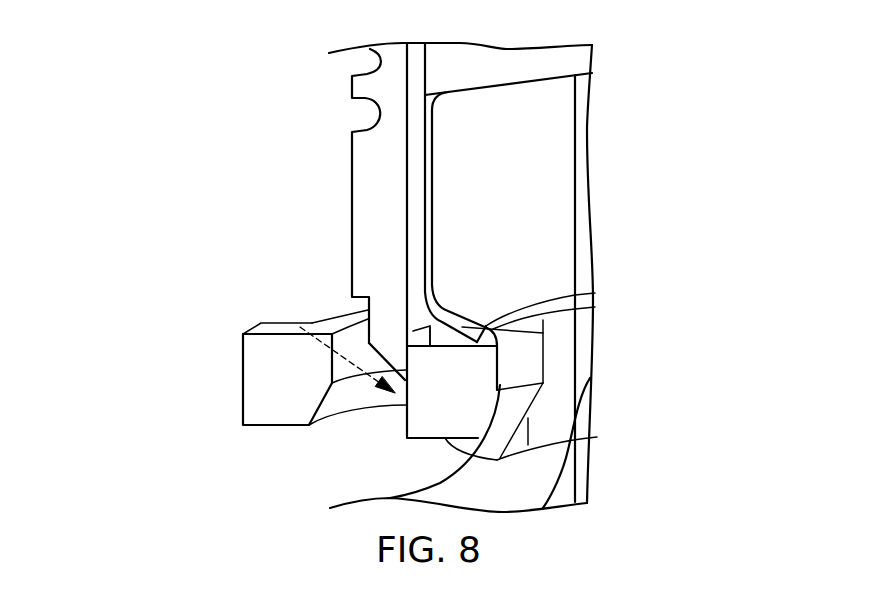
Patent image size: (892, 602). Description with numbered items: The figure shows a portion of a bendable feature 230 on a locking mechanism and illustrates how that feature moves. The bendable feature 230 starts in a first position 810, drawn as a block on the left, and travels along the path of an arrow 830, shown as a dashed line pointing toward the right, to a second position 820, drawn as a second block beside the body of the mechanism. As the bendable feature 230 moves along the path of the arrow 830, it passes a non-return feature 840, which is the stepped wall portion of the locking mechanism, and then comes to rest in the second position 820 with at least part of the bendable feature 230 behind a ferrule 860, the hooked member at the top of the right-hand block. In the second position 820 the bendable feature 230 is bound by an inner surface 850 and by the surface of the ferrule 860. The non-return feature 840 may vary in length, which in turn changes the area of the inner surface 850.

The first position 810 is at (274, 360).
The second position 820 is at (467, 413).
The arrow 830 is at (331, 334).
The non-return feature 840 is at (376, 363).
The inner surface 850 is at (413, 330).
The ferrule 860 is at (497, 342).
The bendable feature 230 is at (282, 393).